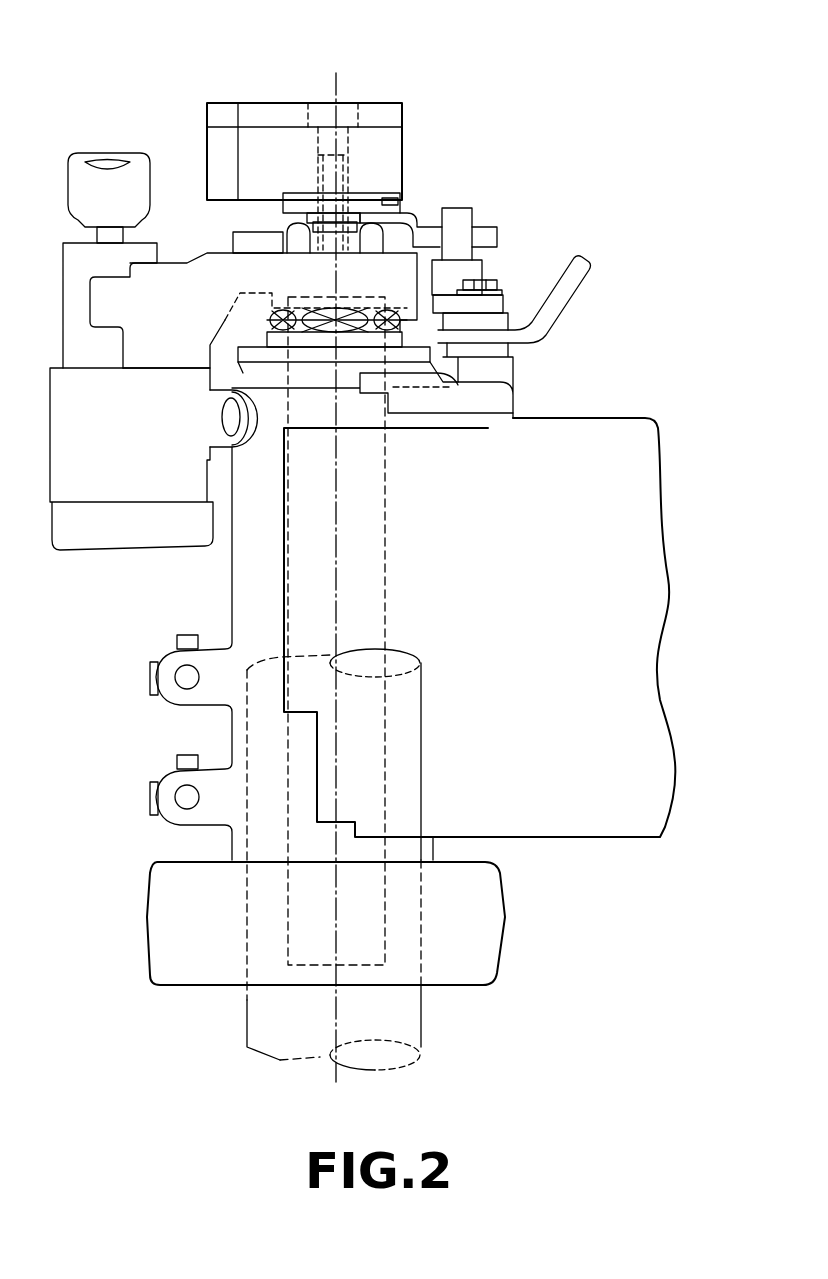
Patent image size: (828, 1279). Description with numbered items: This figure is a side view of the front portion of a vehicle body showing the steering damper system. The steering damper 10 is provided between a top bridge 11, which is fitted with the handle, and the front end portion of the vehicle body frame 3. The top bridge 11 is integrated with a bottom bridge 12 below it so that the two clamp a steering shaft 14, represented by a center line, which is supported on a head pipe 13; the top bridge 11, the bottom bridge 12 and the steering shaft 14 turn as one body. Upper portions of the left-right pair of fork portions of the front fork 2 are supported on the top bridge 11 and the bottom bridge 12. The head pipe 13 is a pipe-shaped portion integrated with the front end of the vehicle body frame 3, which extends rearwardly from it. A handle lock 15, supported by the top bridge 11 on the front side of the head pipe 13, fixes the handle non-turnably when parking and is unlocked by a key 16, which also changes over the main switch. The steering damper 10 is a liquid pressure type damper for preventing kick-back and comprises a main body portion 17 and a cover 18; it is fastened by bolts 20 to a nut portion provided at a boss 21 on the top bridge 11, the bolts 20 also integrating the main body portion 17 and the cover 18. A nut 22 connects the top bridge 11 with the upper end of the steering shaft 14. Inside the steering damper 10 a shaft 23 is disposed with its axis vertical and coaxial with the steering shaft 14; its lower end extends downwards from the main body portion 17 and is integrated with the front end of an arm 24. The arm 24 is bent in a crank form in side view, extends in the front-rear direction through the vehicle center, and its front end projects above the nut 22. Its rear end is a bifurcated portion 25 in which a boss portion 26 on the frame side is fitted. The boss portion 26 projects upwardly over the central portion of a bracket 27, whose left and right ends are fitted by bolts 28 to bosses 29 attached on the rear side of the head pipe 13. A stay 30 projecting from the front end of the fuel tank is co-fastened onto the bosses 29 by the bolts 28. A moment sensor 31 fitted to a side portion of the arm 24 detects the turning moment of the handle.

The front fork 2 is at (247, 1018).
The vehicle body frame 3 is at (638, 630).
The steering damper 10 is at (256, 96).
The top bridge 11 is at (112, 302).
The bottom bridge 12 is at (162, 910).
The head pipe 13 is at (252, 597).
The steering shaft 14 is at (385, 543).
The handle lock 15 is at (92, 542).
The key 16 is at (105, 158).
The main body portion 17 is at (213, 170).
The cover 18 is at (218, 118).
The bolts 20 is at (357, 120).
The boss 21 is at (315, 207).
The nut 22 is at (413, 217).
The shaft 23 is at (350, 163).
The arm 24 is at (372, 190).
The bifurcated portion 25 is at (490, 238).
The boss portion 26 is at (463, 215).
The bracket 27 is at (497, 307).
The bolts 28 is at (485, 268).
The bosses 29 is at (500, 367).
The stay 30 is at (560, 297).
The moment sensor 31 is at (405, 200).